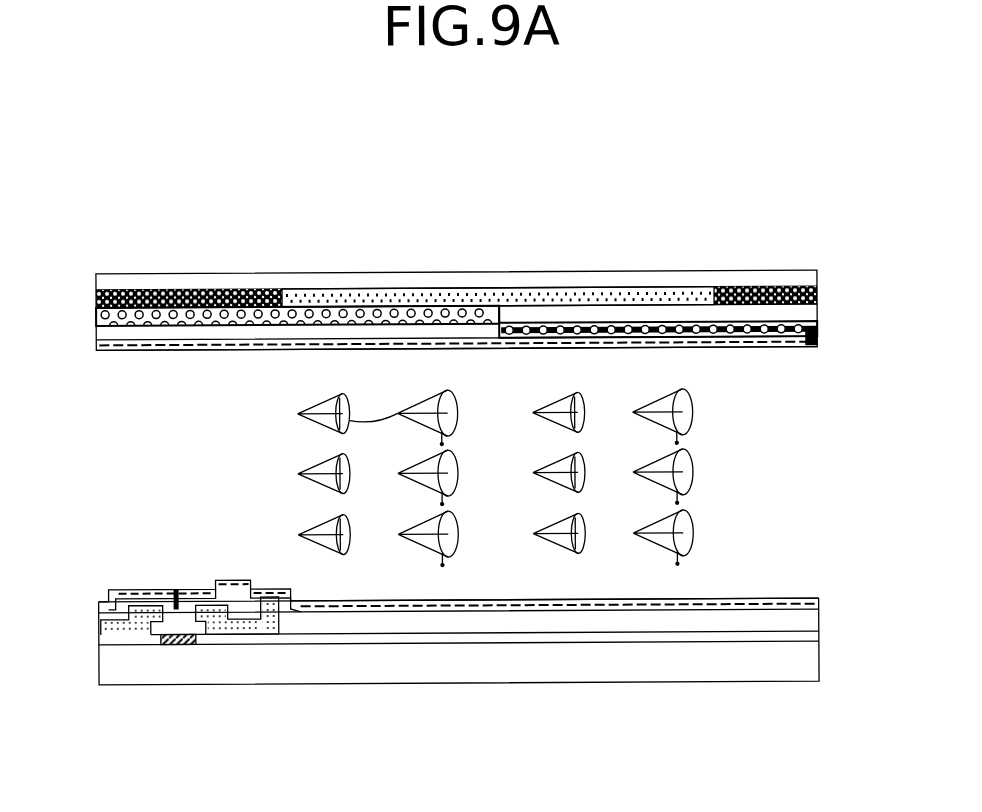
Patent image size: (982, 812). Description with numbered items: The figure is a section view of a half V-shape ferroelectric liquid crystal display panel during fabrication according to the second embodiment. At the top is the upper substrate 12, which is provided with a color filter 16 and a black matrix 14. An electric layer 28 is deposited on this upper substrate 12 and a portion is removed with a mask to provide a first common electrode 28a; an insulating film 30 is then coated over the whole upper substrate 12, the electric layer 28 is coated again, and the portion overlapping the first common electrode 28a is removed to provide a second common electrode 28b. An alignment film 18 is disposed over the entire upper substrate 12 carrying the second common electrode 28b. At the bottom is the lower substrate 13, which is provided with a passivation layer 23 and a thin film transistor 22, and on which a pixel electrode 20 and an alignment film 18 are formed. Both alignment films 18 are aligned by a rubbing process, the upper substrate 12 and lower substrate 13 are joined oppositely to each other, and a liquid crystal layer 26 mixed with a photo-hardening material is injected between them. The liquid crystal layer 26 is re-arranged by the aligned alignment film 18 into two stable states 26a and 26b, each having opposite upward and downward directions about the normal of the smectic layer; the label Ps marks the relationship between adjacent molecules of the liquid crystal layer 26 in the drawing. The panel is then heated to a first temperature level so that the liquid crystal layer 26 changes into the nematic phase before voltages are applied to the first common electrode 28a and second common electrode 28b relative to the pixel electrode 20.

The upper substrate 12 is at (725, 281).
The lower substrate 13 is at (797, 670).
The black matrix 14 is at (818, 290).
The color filter 16 is at (657, 300).
The alignment film 18 is at (808, 350).
The pixel electrode 20 is at (818, 603).
The thin film transistor 22 is at (88, 623).
The passivation layer 23 is at (812, 621).
The liquid crystal layer 26 is at (424, 478).
The first stable state 26a is at (298, 413).
The second stable state 26b is at (338, 428).
The electric layer 28 is at (456, 246).
The first common electrode 28a is at (527, 312).
The second common electrode 28b is at (436, 333).
The insulating film 30 is at (818, 335).
The spacer pitch Ps is at (345, 401).